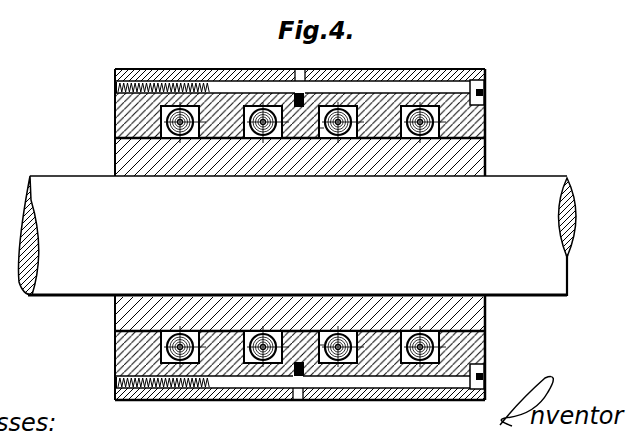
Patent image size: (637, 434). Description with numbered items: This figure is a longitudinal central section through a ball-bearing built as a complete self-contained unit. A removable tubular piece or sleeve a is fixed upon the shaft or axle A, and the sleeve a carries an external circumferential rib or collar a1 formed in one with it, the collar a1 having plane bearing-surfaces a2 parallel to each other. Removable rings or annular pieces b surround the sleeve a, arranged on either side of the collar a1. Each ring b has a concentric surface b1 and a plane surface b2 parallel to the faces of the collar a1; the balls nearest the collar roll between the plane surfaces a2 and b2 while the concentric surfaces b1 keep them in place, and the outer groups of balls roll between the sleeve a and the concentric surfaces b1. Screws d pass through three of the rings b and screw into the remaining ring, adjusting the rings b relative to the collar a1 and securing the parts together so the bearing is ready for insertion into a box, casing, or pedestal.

The shaft or axle A is at (297, 236).
The tubular piece or sleeve a is at (300, 235).
The rib or collar a1 is at (323, 122).
The plane bearing-surfaces a2 is at (320, 134).
The rings or annular pieces b is at (300, 234).
The concentric surfaces b1 is at (268, 104).
The plane surfaces b2 is at (373, 117).
The screws d is at (370, 88).